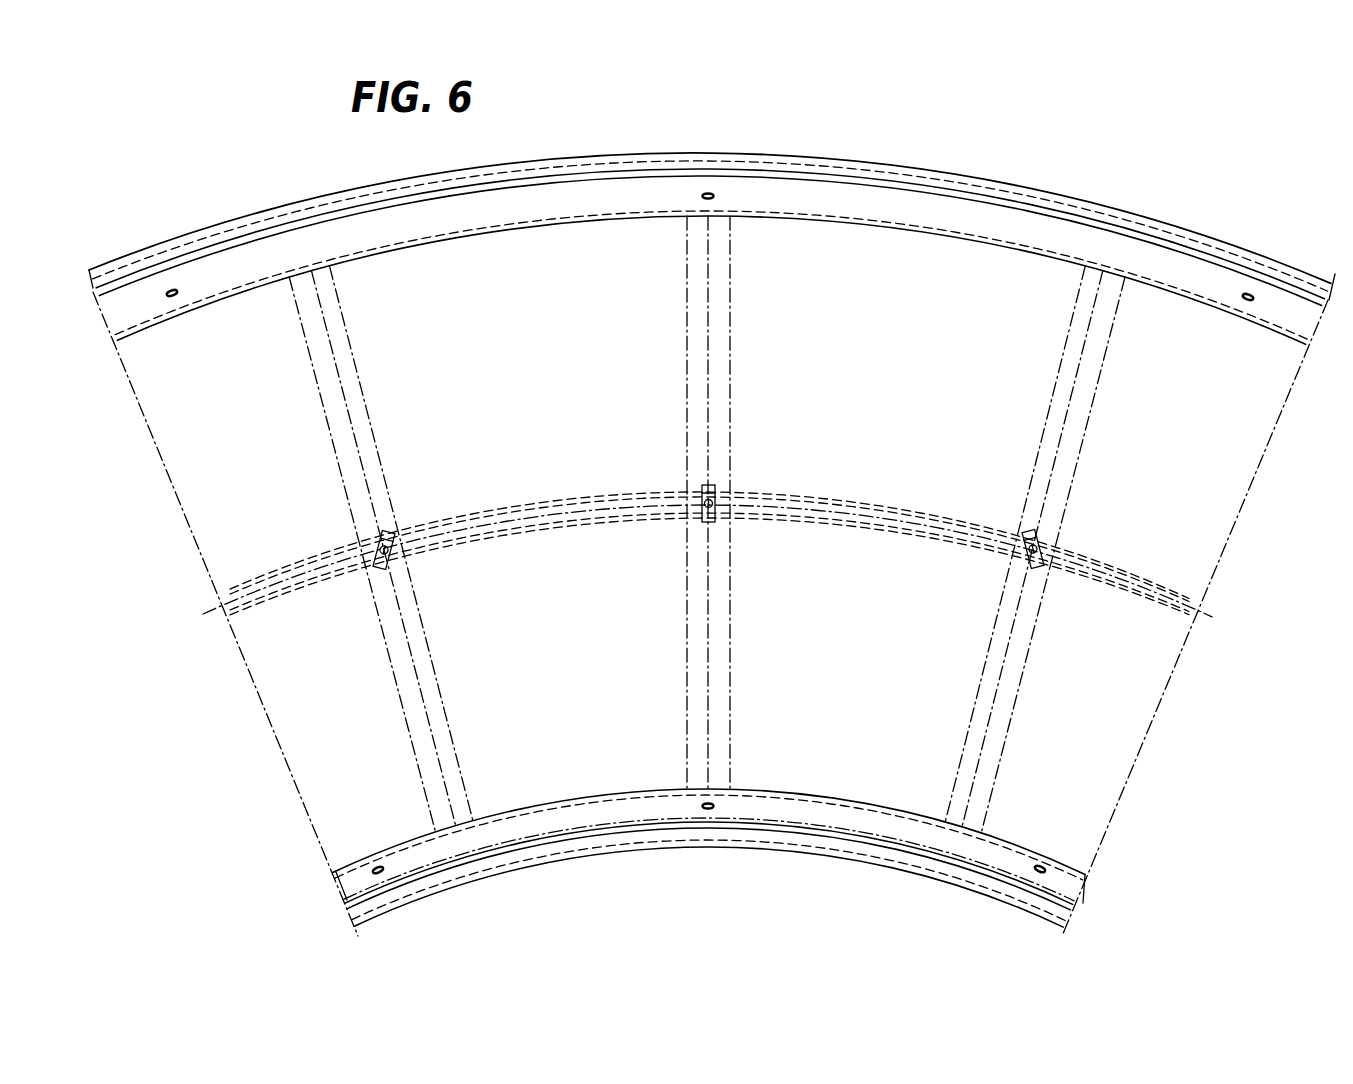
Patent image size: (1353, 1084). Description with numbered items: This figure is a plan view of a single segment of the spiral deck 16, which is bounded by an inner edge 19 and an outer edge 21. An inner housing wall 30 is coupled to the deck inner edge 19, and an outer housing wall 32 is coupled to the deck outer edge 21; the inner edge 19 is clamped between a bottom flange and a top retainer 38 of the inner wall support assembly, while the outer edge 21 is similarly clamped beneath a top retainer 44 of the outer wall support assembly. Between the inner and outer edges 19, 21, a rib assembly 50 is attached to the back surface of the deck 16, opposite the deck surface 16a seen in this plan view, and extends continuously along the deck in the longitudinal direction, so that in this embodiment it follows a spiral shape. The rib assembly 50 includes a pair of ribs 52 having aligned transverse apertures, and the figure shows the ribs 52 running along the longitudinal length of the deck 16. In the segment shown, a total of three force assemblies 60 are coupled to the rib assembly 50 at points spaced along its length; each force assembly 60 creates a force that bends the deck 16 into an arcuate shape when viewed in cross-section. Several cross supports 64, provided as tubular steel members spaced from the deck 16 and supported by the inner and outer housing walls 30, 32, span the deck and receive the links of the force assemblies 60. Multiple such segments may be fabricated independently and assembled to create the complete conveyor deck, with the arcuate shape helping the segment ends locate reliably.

The spiral deck 16 is at (943, 282).
The panel section 16a is at (588, 669).
The inner edge 19 is at (743, 822).
The outer edge 21 is at (781, 178).
The inner housing wall 30 is at (638, 828).
The outer housing wall 32 is at (903, 181).
The top retainer 38 is at (838, 812).
The top retainer 44 is at (550, 207).
The rib assembly 50 is at (270, 625).
The ribs 52 is at (247, 580).
The force assembly 60 is at (393, 503).
The cross support 64 is at (351, 325).